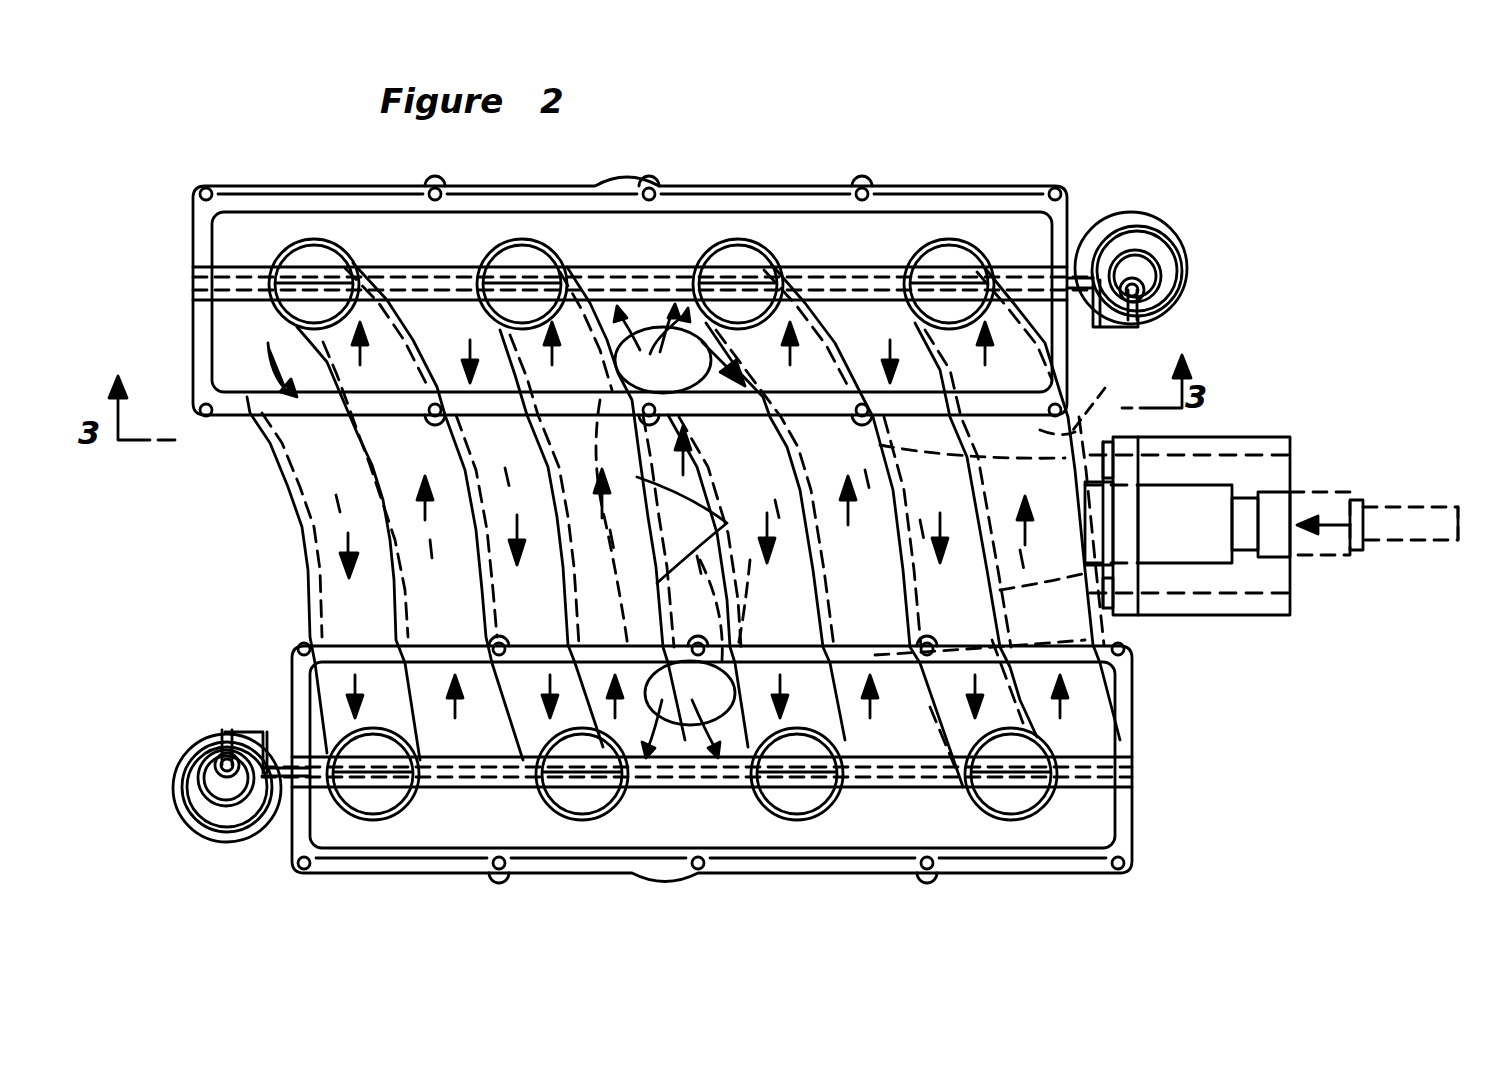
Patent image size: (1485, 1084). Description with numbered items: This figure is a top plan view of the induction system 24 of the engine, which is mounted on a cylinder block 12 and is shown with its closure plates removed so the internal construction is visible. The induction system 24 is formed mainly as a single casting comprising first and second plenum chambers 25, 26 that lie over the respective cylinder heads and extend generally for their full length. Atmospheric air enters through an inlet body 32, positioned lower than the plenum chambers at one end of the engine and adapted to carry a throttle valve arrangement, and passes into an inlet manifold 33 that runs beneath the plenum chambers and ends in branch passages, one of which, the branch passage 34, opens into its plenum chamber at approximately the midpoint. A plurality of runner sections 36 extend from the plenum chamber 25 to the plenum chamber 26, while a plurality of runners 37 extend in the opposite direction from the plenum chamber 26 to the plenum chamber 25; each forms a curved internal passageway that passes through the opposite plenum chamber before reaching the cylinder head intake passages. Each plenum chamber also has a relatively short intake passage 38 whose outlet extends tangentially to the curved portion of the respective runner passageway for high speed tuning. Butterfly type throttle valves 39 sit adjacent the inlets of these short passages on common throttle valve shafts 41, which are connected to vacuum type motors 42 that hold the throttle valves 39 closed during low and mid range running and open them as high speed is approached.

The cylinder block 12 is at (1215, 483).
The induction system 24 is at (290, 160).
The first plenum chamber 25 is at (832, 892).
The second plenum chamber 26 is at (820, 168).
The inlet body 32 is at (1245, 615).
The inlet manifold 33 is at (998, 507).
The branch passage 34 is at (693, 707).
The runner sections 36 is at (578, 426).
The runners 37 is at (470, 622).
The intake passage 38 is at (760, 262).
The butterfly type throttle valves 39 is at (720, 262).
The throttle valve shafts 41 is at (1080, 232).
The vacuum type motor 42 is at (1148, 248).